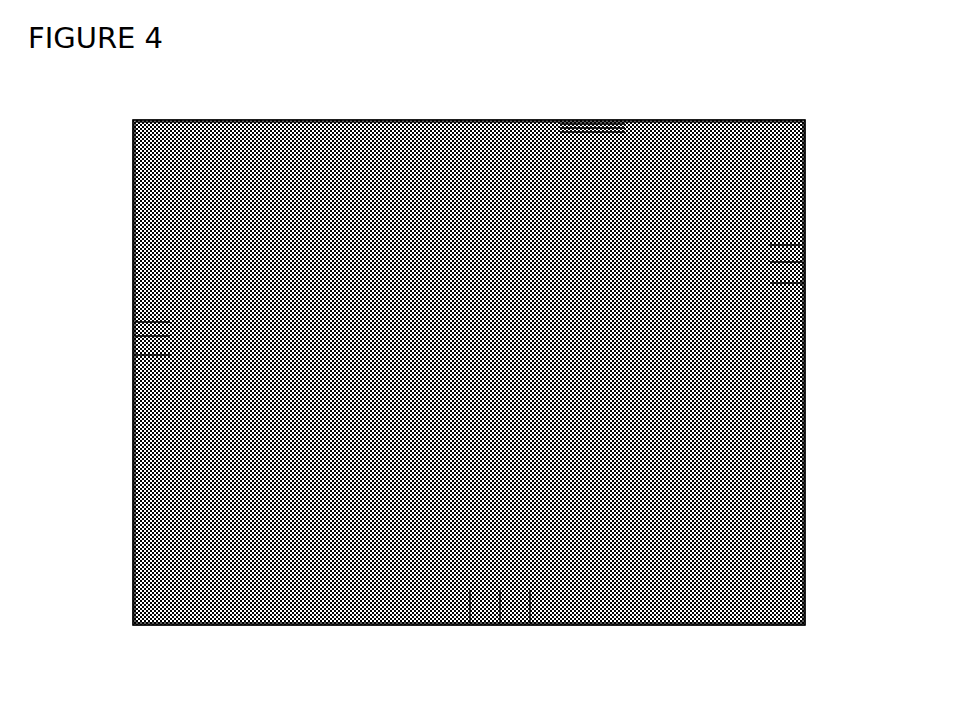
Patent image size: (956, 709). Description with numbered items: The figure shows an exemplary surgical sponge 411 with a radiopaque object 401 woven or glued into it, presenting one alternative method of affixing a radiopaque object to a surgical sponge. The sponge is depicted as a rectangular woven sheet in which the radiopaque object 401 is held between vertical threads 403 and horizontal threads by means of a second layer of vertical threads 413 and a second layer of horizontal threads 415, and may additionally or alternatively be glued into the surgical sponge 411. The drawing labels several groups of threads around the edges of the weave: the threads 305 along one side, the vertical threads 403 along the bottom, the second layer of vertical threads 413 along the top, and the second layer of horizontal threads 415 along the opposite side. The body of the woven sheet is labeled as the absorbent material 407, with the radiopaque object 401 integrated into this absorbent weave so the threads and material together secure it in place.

The surgical sponge 411 is at (362, 90).
The radiopaque object 401 is at (745, 120).
The absorbent material 407 is at (803, 425).
The second layer of vertical threads 413 is at (565, 120).
The threads 305 is at (803, 247).
The second layer of horizontal threads 415 is at (133, 355).
The vertical threads 403 is at (470, 625).